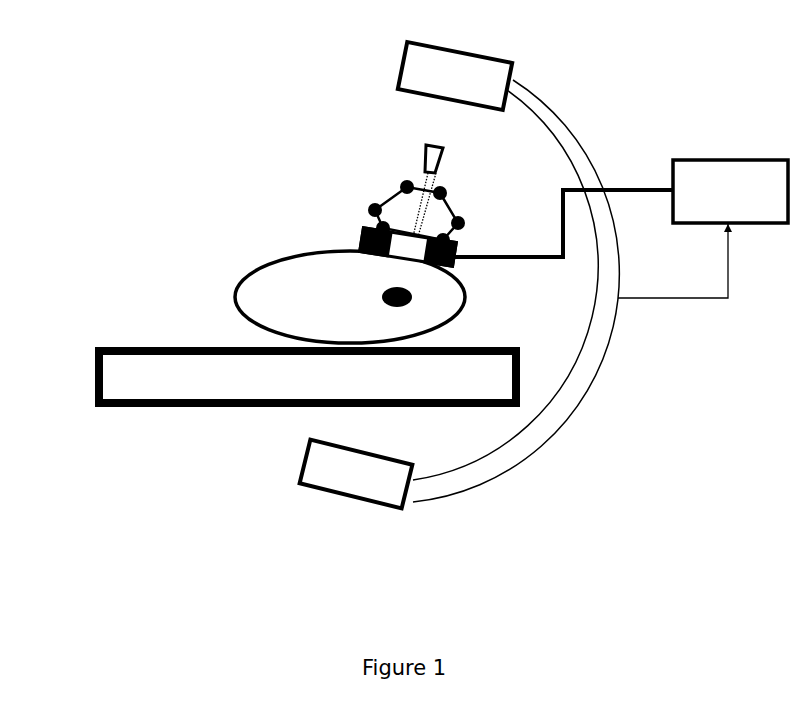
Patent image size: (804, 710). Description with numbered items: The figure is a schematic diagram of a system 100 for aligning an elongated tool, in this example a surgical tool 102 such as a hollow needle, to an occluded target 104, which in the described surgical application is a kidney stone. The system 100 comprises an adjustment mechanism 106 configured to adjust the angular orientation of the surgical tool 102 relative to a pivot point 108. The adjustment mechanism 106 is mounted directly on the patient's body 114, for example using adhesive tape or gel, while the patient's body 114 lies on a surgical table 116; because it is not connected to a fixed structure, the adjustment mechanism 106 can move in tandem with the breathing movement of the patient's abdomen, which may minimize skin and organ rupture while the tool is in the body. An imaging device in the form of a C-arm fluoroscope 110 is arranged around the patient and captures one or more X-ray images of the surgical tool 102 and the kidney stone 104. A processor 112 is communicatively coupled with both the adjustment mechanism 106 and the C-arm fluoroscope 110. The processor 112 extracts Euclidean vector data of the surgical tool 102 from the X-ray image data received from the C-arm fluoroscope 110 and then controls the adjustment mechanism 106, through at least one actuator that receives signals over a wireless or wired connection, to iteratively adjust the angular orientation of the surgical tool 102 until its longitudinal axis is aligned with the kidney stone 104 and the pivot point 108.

The system 100 is at (202, 500).
The surgical tool 102 is at (413, 152).
The occluded target 104 is at (382, 295).
The adjustment mechanism 106 is at (360, 233).
The pivot point 108 is at (403, 253).
The C-arm fluoroscope 110 is at (587, 123).
The processor 112 is at (750, 155).
The patient's body 114 is at (240, 273).
The surgical table 116 is at (95, 377).